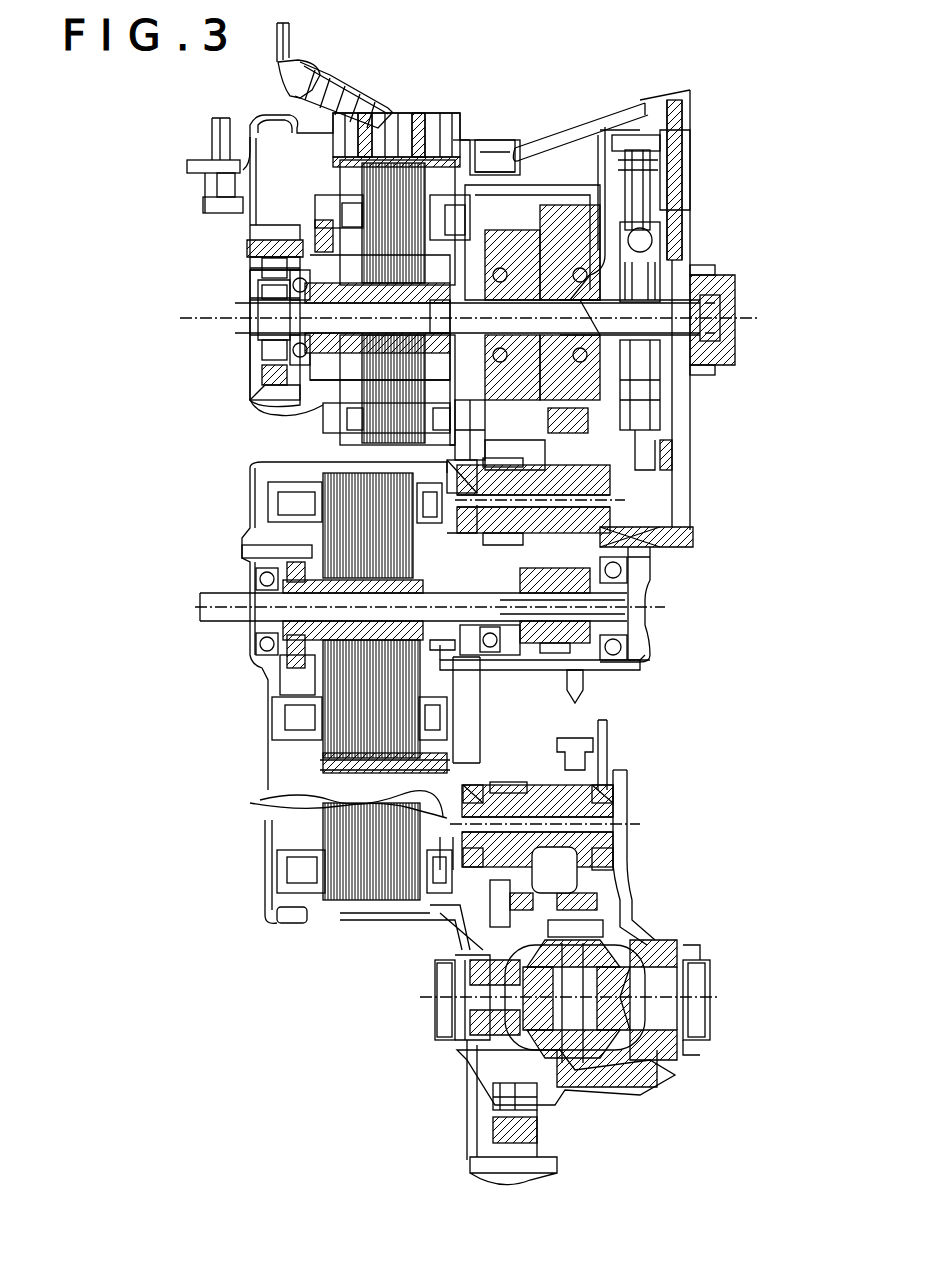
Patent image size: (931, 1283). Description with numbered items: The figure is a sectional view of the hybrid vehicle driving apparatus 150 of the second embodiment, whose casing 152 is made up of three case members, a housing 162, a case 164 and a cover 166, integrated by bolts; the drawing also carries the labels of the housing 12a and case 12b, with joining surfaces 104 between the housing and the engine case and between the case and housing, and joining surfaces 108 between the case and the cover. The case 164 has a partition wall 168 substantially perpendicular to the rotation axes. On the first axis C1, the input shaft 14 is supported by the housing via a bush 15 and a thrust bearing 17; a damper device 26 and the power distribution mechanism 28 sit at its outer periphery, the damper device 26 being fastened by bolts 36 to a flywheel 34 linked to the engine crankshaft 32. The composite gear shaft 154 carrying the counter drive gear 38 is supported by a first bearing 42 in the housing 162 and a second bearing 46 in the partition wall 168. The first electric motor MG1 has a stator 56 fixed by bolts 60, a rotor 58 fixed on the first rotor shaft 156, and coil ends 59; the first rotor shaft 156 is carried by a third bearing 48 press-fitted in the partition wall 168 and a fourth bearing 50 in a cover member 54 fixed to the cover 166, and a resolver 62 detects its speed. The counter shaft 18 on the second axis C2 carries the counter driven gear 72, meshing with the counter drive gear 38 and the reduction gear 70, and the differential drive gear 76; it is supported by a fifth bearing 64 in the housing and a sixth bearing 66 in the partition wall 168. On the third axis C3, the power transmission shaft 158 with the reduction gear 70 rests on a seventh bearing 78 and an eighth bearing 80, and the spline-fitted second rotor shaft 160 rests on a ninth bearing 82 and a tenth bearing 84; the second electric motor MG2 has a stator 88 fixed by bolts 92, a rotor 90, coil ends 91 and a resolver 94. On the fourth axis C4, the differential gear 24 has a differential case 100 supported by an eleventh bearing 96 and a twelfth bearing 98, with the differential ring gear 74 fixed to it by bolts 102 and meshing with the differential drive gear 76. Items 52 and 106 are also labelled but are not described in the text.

The hybrid vehicle driving apparatus 150 is at (753, 68).
The joining surfaces 104 is at (660, 105).
The joining surfaces 108 is at (290, 112).
The bolts 60 is at (395, 160).
The case 164 is at (435, 158).
The casing 152 is at (504, 127).
The bolt 106 is at (490, 150).
The housing 162 is at (585, 125).
The bolts 36 is at (670, 134).
The flywheel 34 is at (690, 162).
The damper device 26 is at (661, 219).
The bush 15 is at (660, 242).
The input shaft 14 is at (722, 294).
The crankshaft 32 is at (722, 308).
The first axis C1 is at (740, 320).
The first electric motor MG1 is at (315, 199).
The stator 56 is at (375, 212).
The resolver 62 is at (310, 227).
The cover 166 is at (204, 202).
The bearing holder 52 is at (246, 237).
The cover member 54 is at (280, 274).
The first rotor shaft 156 is at (262, 302).
The fourth bearing 50 is at (288, 354).
The rotor 58 is at (420, 282).
The coil ends 59 is at (345, 422).
The third bearing 48 is at (385, 442).
The power distribution mechanism 28 is at (520, 260).
The composite gear shaft 154 is at (538, 210).
The counter drive gear 38 is at (572, 212).
The thrust bearing 17 is at (585, 282).
The first bearing 42 is at (585, 374).
The second bearing 46 is at (481, 430).
The counter driven gear 72 is at (548, 422).
The partition wall 168 is at (515, 453).
The counter shaft 18 is at (540, 484).
The second axis C2 is at (600, 502).
The differential drive gear 76 is at (503, 542).
The sixth bearing 66 is at (458, 474).
The fifth bearing 64 is at (655, 552).
The third axis C3 is at (665, 609).
The second rotor shaft 160 is at (330, 594).
The rotor 90 is at (360, 550).
The tenth bearing 84 is at (272, 560).
The second electric motor MG2 is at (292, 764).
The coil ends 91 is at (300, 722).
The stator 88 is at (360, 732).
The resolver 94 is at (283, 677).
The bolts 92 is at (292, 792).
The ninth bearing 82 is at (462, 650).
The eighth bearing 80 is at (488, 664).
The power transmission shaft 158 is at (501, 645).
The reduction gear 70 is at (575, 642).
The seventh bearing 78 is at (648, 662).
The housing 12a is at (622, 872).
The case 12b is at (445, 932).
The differential case 100 is at (625, 944).
The eleventh bearing 96 is at (650, 947).
The fourth axis C4 is at (712, 999).
The differential gear 24 is at (633, 1072).
The twelfth bearing 98 is at (470, 1062).
The bolts 102 is at (545, 1099).
The differential ring gear 74 is at (545, 1140).